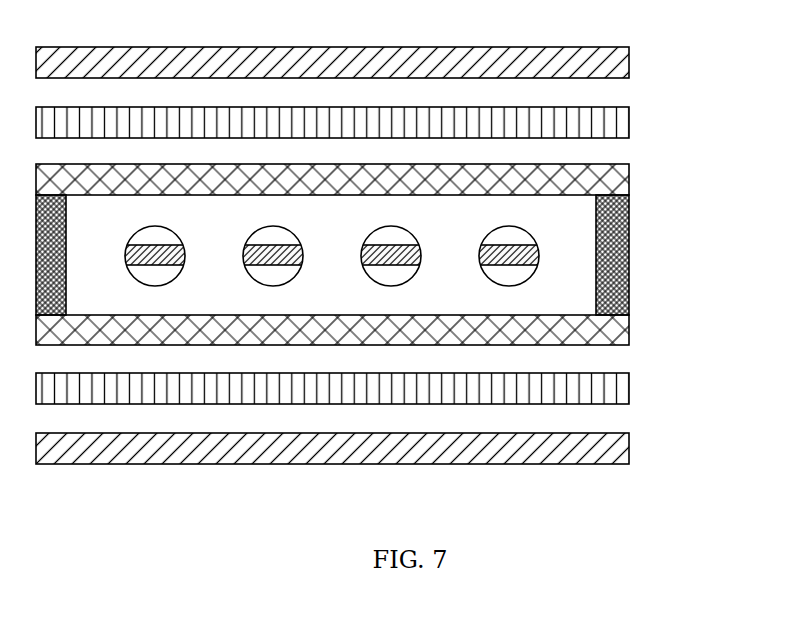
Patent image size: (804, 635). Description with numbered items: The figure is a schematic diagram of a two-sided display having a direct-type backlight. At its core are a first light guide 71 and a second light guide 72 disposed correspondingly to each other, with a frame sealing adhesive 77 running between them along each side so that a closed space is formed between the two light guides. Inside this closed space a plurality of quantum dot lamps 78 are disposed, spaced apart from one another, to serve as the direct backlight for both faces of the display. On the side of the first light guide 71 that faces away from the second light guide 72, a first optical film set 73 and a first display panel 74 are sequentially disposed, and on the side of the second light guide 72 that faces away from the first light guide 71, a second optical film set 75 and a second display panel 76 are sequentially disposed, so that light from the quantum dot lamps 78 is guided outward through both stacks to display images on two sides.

The first light guide 71 is at (603, 168).
The second light guide 72 is at (600, 347).
The first optical film set 73 is at (592, 117).
The first display panel 74 is at (585, 55).
The second optical film set 75 is at (600, 406).
The second display panel 76 is at (588, 447).
The frame sealing adhesive 77 is at (631, 220).
The quantum dot lamp 78 is at (521, 228).